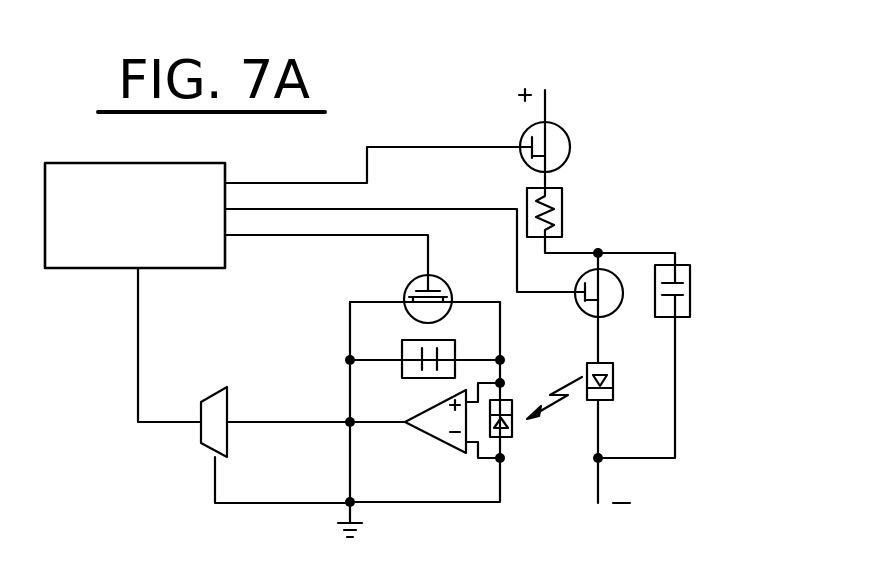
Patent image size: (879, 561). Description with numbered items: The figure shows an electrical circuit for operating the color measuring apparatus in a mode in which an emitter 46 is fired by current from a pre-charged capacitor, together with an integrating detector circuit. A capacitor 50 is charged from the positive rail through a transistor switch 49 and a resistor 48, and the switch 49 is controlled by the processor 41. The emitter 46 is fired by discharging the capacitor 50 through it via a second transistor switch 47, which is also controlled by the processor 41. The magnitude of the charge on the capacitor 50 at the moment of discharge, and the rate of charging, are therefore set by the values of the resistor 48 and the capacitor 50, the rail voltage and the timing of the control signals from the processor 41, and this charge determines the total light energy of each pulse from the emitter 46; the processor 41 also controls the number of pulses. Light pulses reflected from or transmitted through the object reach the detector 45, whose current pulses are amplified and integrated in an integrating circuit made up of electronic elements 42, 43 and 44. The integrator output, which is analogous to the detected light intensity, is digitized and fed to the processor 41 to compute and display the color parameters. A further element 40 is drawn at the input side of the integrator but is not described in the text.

The sensor / transducer 40 is at (218, 388).
The processor 41 is at (163, 268).
The electronic element of the integrating circuit 42 is at (415, 278).
The electronic element of the integrating circuit 43 is at (408, 378).
The electronic element of the integrating circuit 44 is at (422, 433).
The detector 45 is at (512, 432).
The emitter 46 is at (613, 384).
The transistor switch 47 is at (584, 315).
The resistor 48 is at (563, 205).
The transistor switch 49 is at (568, 136).
The capacitor 50 is at (690, 300).